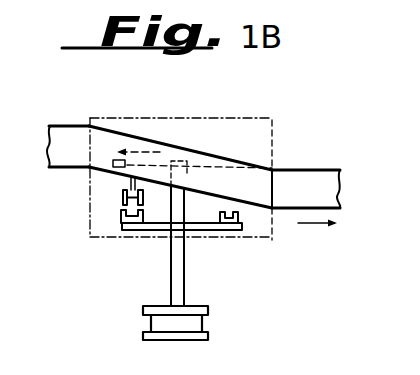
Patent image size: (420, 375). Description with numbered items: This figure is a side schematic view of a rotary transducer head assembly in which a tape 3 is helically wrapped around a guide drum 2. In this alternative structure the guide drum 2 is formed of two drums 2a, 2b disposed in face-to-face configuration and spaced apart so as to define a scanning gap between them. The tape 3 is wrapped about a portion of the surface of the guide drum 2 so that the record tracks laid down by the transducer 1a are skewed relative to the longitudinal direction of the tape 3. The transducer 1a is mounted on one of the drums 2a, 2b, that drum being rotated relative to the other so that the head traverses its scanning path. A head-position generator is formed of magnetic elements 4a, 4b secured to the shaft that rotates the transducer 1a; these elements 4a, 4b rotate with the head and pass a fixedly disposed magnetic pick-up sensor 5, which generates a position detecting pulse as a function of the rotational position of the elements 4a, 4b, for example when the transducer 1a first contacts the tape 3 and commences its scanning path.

The magnetic record/playback transducer 1a is at (115, 160).
The guide drum 2 is at (216, 118).
The drum 2a is at (273, 139).
The drum 2b is at (272, 240).
The tape 3 is at (57, 127).
The magnetic element 4a is at (122, 229).
The magnetic element 4b is at (239, 229).
The magnetic pick-up sensor 5 is at (122, 198).